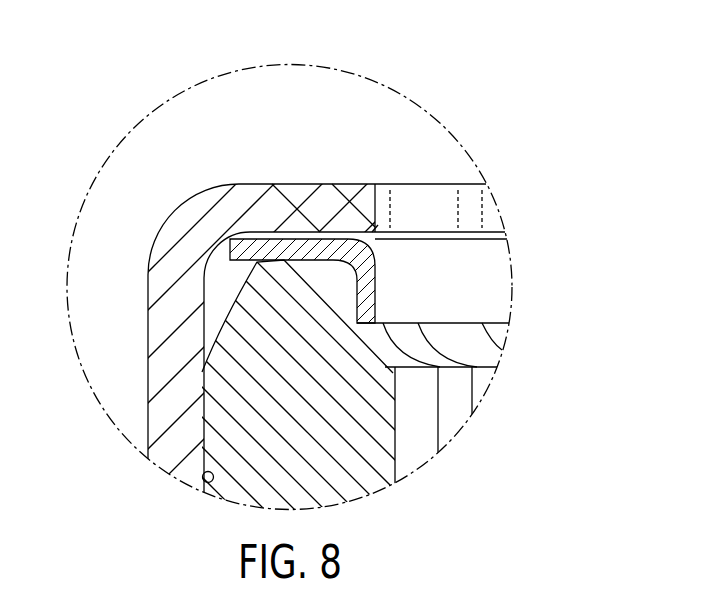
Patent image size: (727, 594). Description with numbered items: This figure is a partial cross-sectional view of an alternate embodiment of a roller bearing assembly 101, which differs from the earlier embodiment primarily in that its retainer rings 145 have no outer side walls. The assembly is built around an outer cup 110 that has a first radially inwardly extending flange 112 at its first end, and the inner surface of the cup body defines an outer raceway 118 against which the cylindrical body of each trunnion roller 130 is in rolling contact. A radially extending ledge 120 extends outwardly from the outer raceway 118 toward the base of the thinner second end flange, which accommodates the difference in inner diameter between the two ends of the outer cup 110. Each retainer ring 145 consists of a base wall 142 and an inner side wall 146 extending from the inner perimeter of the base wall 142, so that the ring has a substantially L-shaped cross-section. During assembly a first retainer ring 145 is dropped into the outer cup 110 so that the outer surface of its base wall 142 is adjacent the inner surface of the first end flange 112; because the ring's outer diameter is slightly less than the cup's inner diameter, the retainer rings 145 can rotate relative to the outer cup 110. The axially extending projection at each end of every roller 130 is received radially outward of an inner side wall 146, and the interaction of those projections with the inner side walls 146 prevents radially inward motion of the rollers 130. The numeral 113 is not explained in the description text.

The roller bearing assembly 101 is at (360, 99).
The outer cup 110 is at (128, 385).
The first end flange 112 is at (341, 184).
The sealing surface 113 is at (257, 236).
The outer raceway 118 is at (197, 470).
The radially extending ledge 120 is at (175, 243).
The trunnion roller 130 is at (420, 447).
The base wall 142 is at (322, 238).
The retainer ring 145 is at (480, 257).
The inner side wall 146 is at (497, 292).